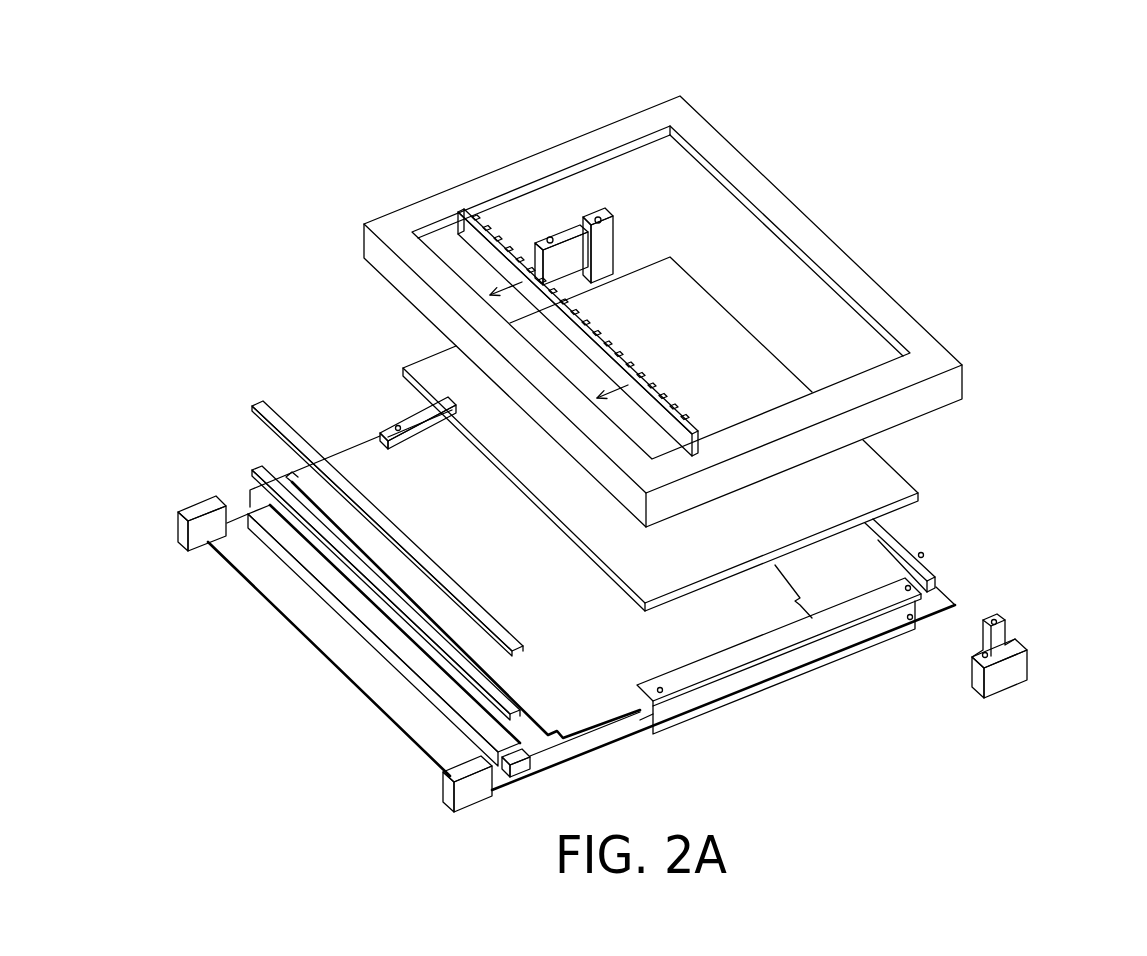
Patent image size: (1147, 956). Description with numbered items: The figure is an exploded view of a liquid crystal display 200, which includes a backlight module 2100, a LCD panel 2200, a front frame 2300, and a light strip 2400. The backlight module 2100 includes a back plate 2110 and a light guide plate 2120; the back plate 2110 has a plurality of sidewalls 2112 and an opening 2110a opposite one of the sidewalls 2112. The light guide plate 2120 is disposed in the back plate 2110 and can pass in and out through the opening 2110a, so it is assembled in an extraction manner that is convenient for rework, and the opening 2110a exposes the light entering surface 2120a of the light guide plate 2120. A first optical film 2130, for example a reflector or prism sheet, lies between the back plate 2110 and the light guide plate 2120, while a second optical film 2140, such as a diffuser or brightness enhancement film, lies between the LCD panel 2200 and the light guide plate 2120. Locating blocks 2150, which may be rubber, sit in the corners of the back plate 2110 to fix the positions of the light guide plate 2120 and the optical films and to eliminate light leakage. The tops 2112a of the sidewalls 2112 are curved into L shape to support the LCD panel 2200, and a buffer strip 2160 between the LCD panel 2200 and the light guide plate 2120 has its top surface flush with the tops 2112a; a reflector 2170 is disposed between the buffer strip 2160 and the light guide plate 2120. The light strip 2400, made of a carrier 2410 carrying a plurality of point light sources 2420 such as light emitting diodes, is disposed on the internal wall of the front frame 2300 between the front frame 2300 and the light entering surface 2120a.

The liquid crystal display 200 is at (1040, 823).
The backlight module 2100 is at (993, 562).
The back plate 2110 is at (792, 690).
The opening 2110a is at (642, 733).
The sidewalls 2112 is at (760, 676).
The tops of the sidewalls 2112a is at (910, 533).
The light guide plate 2120 is at (545, 764).
The light entering surface 2120a is at (371, 632).
The first optical film 2130 is at (363, 678).
The second optical film 2140 is at (363, 468).
The locating blocks 2150 is at (1000, 676).
The buffer strip 2160 is at (258, 407).
The reflector 2170 is at (262, 471).
The LCD panel 2200 is at (890, 473).
The front frame 2300 is at (773, 199).
The light strip 2400 is at (545, 66).
The carrier 2410 is at (460, 211).
The point light sources 2420 is at (484, 219).